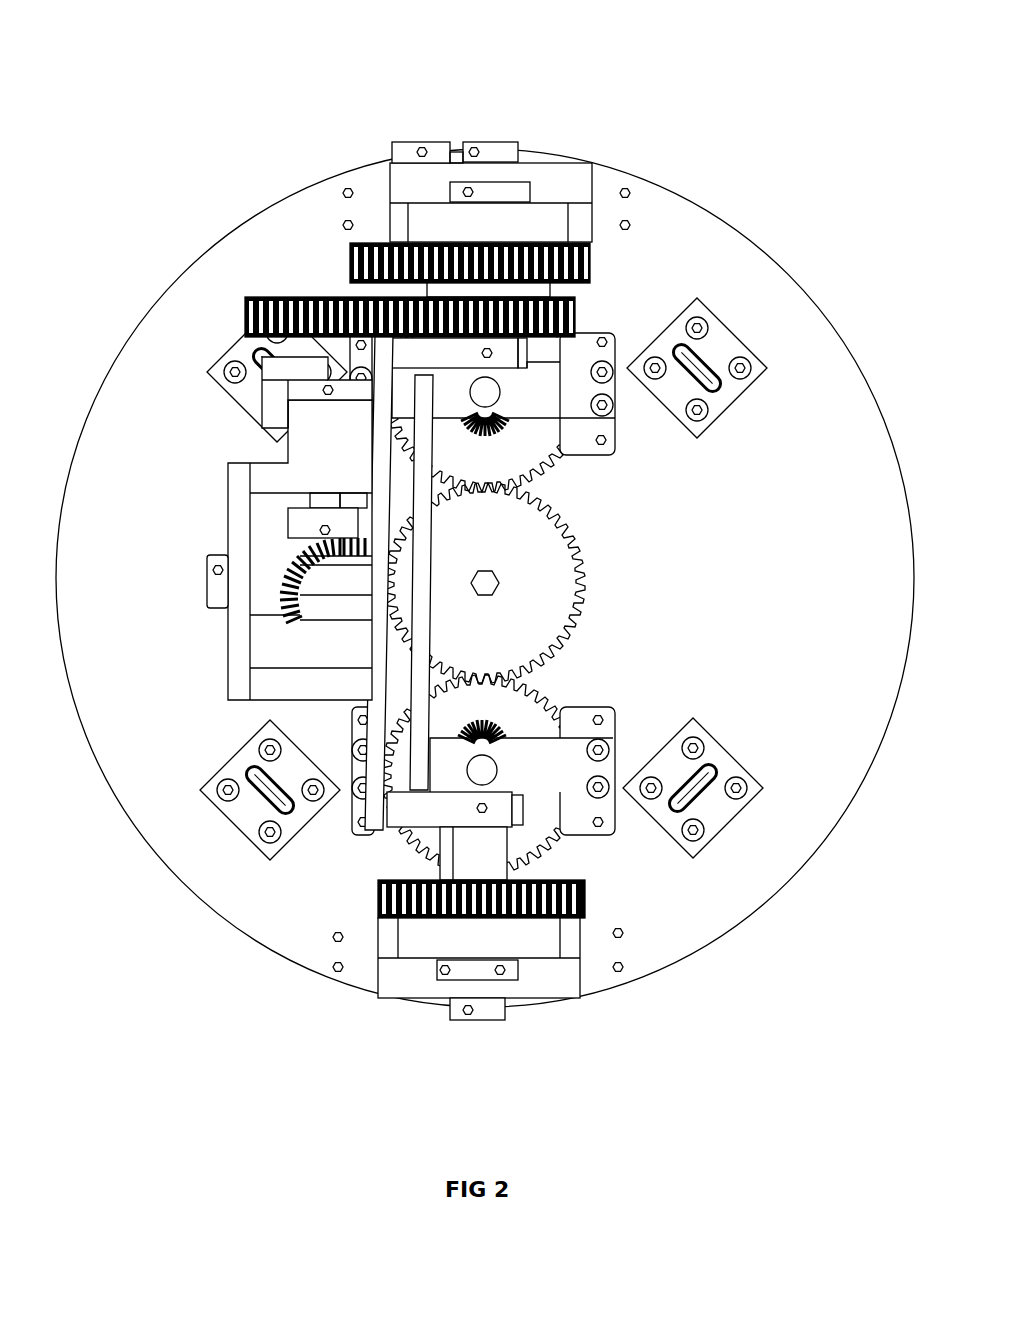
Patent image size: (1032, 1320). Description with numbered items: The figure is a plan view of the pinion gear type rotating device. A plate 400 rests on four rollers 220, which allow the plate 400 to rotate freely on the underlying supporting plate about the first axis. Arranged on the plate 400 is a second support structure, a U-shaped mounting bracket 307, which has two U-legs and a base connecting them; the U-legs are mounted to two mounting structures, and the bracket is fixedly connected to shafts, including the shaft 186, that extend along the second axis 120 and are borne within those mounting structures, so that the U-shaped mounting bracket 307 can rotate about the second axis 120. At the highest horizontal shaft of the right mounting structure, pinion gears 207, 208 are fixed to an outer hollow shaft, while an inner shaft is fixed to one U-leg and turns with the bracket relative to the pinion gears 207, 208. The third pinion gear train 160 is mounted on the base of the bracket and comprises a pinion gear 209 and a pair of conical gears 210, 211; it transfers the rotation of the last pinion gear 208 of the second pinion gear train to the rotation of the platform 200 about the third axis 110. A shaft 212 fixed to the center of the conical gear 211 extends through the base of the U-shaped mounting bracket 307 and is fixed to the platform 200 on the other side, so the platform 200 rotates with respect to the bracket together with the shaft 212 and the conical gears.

The second axis 120 is at (486, 565).
The pinion gear 207 is at (487, 232).
The pinion gear 208 is at (578, 305).
The plate 400 is at (172, 408).
The pinion gear 209 is at (257, 355).
The conical gear 210 is at (310, 532).
The conical gear 211 is at (275, 585).
The shaft 212 is at (345, 590).
The third pinion gear train 160 is at (147, 497).
The third axis 110 is at (850, 583).
The platform 200 is at (425, 621).
The U-shaped mounting bracket 307 is at (410, 805).
The shaft 186 is at (472, 862).
The rollers 220 is at (715, 803).